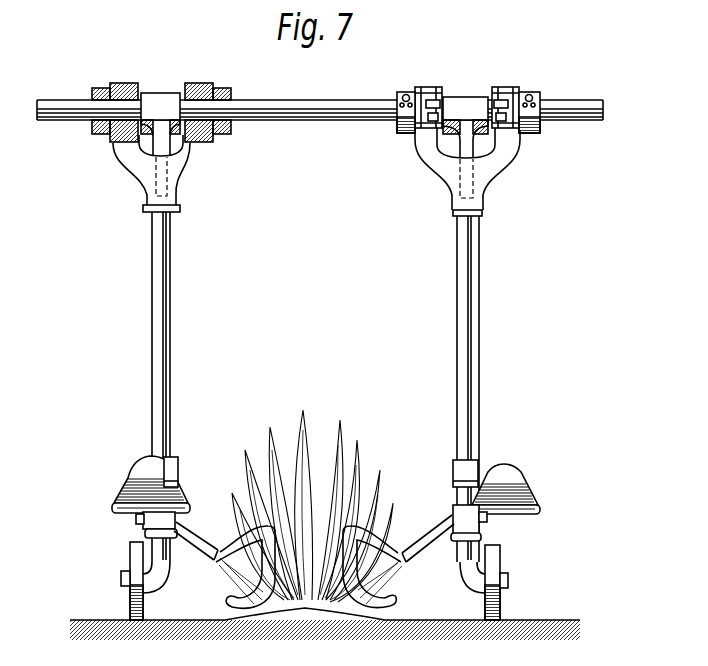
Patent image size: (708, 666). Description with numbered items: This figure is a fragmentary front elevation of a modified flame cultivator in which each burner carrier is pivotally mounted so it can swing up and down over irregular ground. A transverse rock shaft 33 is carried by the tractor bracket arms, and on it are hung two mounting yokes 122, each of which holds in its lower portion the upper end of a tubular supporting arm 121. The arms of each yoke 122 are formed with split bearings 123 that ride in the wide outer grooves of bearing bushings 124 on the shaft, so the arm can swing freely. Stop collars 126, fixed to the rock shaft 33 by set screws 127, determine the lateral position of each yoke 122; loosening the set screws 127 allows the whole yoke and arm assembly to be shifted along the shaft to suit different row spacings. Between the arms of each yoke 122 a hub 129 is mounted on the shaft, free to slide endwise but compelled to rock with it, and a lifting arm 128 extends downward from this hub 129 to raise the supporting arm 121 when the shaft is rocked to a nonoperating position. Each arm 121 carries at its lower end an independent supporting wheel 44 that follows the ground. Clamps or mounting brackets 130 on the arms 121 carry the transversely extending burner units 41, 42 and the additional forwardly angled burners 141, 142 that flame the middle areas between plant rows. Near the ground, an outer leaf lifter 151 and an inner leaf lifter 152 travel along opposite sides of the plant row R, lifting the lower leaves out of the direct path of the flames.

The rock shaft 33 is at (66, 104).
The split bearings 123 is at (116, 90).
The hub 129 is at (161, 95).
The stop collars 126 is at (93, 129).
The bearing bushings 124 is at (109, 137).
The set screws 127 is at (400, 95).
The mounting yoke 122 is at (138, 172).
The lifting arm 128 is at (173, 182).
The supporting arm 121 is at (160, 325).
The clamp or mounting bracket 130 is at (178, 460).
The additional burner 142 is at (133, 480).
The additional burner 141 is at (524, 489).
The burner unit 42 is at (186, 528).
The burner unit 41 is at (440, 530).
The inner leaf lifter 152 is at (258, 568).
The outer leaf lifter 151 is at (365, 570).
The supporting wheel 44 is at (129, 597).
The plant row R is at (308, 383).